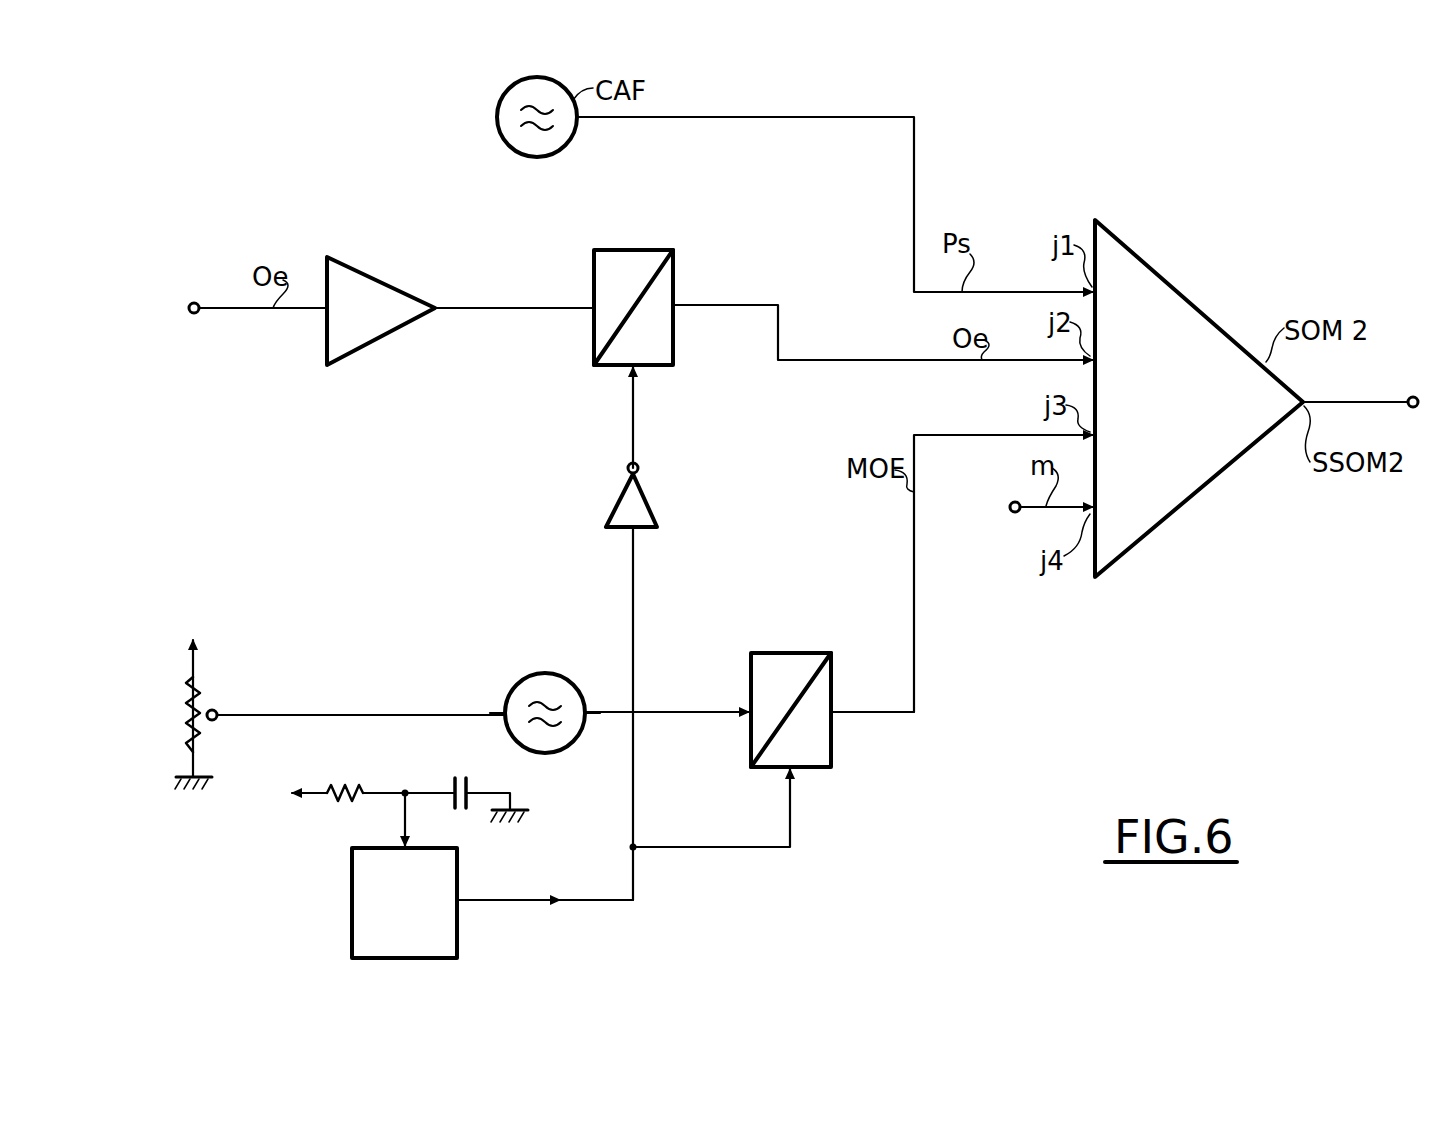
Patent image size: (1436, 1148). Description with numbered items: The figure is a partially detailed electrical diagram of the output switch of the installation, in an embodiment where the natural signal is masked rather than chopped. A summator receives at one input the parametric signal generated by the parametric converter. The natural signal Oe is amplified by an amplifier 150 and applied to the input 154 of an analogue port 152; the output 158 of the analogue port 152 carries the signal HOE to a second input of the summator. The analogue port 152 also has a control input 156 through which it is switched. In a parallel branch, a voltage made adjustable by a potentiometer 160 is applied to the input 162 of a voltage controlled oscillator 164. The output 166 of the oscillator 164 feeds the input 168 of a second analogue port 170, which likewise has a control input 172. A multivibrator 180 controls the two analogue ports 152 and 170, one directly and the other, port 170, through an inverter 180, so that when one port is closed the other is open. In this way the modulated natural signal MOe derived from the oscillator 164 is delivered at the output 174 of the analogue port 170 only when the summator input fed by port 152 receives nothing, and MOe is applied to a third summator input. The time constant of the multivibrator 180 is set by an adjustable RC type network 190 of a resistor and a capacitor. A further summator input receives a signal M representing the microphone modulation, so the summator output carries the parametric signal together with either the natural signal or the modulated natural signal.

The amplifier 150 is at (370, 280).
The analogue port 152 is at (675, 345).
The input of the analogue port 154 is at (591, 313).
The modulator control input 156 is at (636, 372).
The output of the analogue port 158 is at (675, 306).
The potentiometer 160 is at (220, 708).
The input of the voltage controlled oscillator 162 is at (503, 701).
The voltage controlled oscillator 164 is at (560, 683).
The output of the oscillator 166 is at (580, 742).
The input of the analogue port 168 is at (750, 700).
The analogue port 170 is at (815, 622).
The modulator control input 172 is at (793, 770).
The output of the analogue port 174 is at (836, 702).
The multivibrator 180 is at (655, 500).
The adjustable RC type network 190 is at (447, 779).